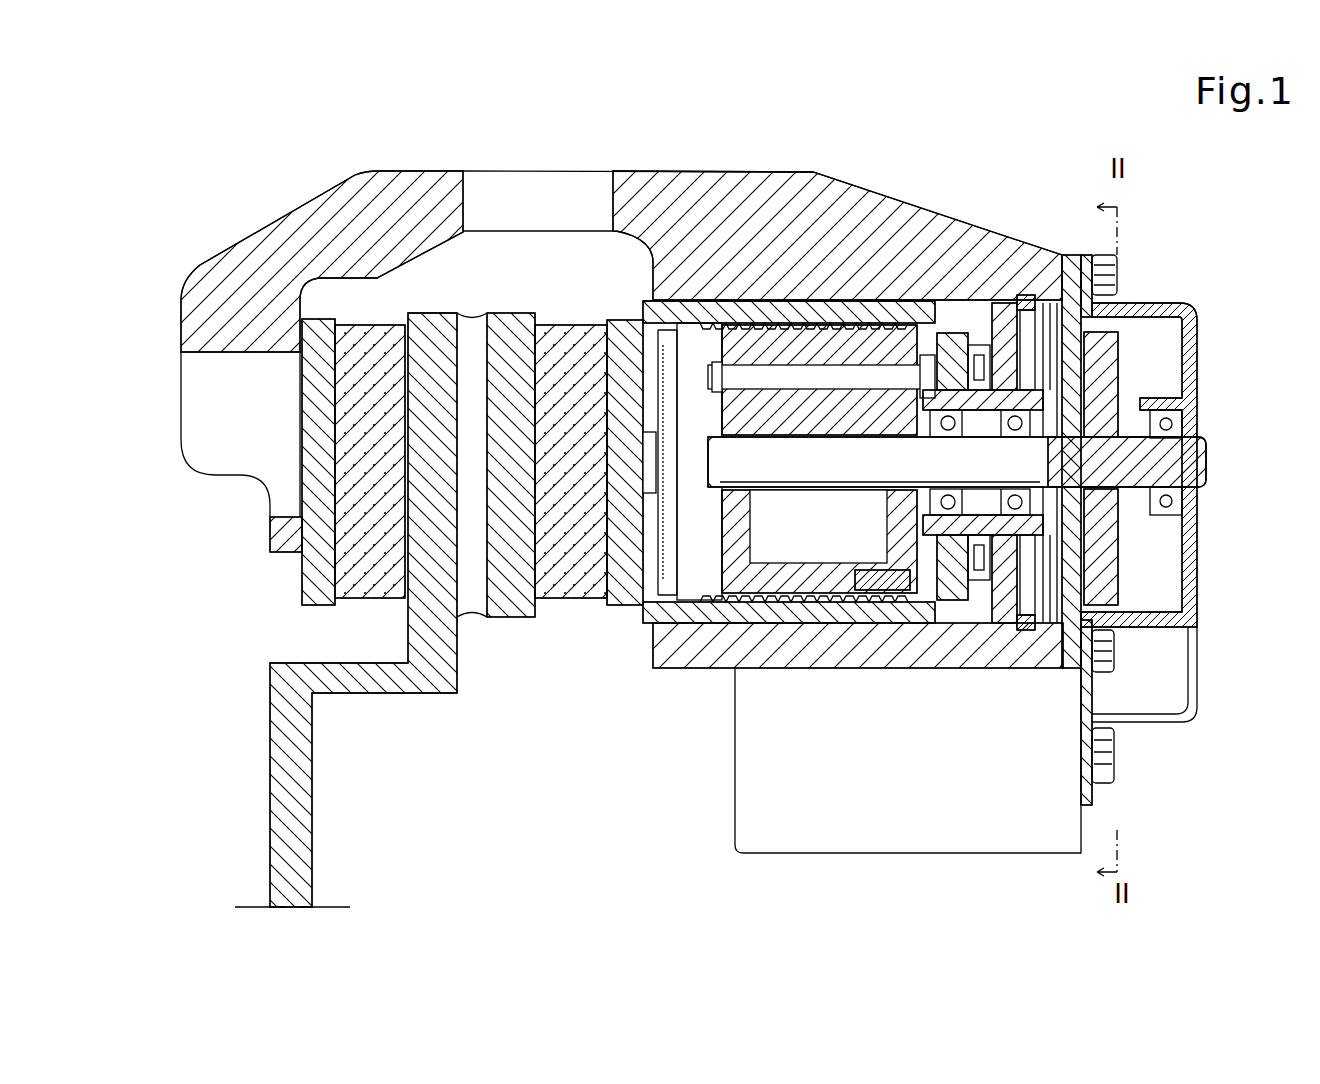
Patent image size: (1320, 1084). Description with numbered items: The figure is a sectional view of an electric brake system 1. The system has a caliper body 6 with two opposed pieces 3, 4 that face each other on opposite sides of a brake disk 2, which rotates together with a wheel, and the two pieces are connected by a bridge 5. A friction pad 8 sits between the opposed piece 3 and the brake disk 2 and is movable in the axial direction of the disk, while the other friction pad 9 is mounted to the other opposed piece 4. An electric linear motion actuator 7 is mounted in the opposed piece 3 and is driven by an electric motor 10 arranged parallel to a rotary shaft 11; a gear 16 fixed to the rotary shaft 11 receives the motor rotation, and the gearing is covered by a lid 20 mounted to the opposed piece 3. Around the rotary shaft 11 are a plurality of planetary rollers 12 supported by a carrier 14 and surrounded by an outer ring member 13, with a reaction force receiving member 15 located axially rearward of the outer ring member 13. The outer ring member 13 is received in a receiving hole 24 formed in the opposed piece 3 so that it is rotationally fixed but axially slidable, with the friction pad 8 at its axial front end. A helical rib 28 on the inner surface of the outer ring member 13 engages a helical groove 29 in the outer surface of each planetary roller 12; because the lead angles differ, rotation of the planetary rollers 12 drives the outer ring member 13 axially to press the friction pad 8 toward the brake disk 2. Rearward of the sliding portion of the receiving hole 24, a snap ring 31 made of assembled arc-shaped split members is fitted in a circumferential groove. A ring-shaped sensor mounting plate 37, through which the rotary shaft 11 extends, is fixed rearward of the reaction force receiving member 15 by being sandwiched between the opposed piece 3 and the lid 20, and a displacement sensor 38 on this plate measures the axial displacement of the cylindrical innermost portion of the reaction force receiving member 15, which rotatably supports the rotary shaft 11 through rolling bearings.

The electric brake system 1 is at (461, 314).
The brake disk 2 is at (270, 787).
The opposed piece 3 is at (677, 662).
The opposed piece 4 is at (285, 528).
The bridge 5 is at (429, 183).
The caliper body 6 is at (272, 220).
The electric linear motion actuator 7 is at (636, 622).
The friction pad 8 is at (566, 322).
The friction pad 9 is at (370, 322).
The electric motor 10 is at (735, 816).
The rotary shaft 11 is at (1200, 461).
The planetary roller 12 is at (790, 300).
The outer ring member 13 is at (850, 303).
The carrier 14 is at (912, 330).
The reaction force receiving member 15 is at (1006, 309).
The gear 16 is at (1120, 567).
The lid 20 is at (1192, 302).
The receiving hole 24 is at (958, 612).
The helical rib 28 is at (829, 606).
The helical groove 29 is at (812, 437).
The snap ring 31 is at (1025, 634).
The sensor mounting plate 37 is at (1072, 256).
The displacement sensor 38 is at (1056, 400).